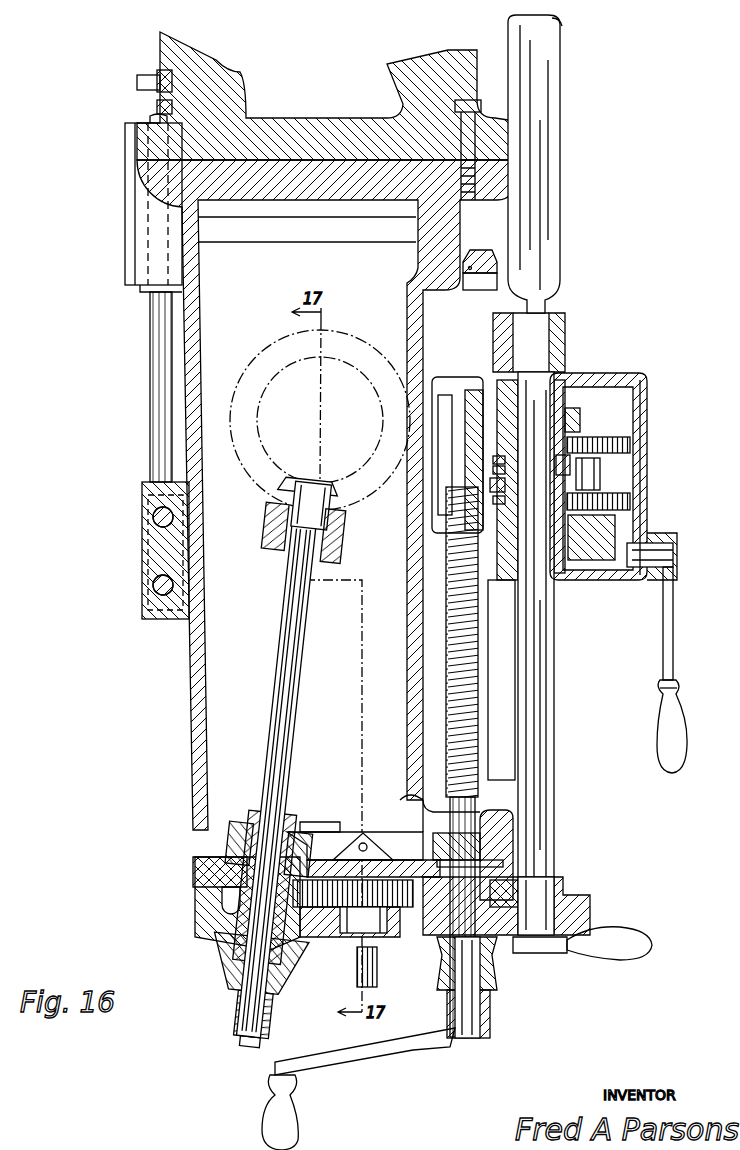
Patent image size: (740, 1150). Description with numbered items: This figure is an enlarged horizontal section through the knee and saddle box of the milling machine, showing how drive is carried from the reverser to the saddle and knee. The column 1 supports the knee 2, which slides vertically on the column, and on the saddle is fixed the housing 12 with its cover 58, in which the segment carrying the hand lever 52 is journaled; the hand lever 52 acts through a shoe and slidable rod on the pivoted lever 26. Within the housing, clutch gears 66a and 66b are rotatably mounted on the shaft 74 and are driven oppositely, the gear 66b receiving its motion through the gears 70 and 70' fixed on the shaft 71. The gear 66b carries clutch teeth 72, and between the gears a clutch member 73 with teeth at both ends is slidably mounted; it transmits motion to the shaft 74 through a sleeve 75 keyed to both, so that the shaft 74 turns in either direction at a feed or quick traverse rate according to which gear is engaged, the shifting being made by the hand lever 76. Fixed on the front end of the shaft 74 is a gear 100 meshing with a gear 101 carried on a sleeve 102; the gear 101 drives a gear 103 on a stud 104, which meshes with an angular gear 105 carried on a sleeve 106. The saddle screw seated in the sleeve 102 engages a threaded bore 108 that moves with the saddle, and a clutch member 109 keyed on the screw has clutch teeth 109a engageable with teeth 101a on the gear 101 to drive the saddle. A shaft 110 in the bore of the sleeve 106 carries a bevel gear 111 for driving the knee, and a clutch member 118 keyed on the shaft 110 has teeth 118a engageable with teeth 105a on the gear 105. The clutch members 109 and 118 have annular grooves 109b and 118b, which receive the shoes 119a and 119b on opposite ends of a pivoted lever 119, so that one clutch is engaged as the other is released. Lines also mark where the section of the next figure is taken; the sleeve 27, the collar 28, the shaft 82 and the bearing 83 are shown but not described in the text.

The column 1 is at (214, 70).
The knee 2 is at (192, 722).
The housing 12 is at (612, 380).
The pivoted lever 26 is at (567, 417).
The sleeve 27 is at (556, 400).
The collar 28 is at (565, 322).
The hand lever 52 is at (688, 727).
The cover 58 is at (641, 414).
The clutch gear 66a is at (574, 528).
The clutch gear 66b is at (487, 452).
The gear 70 is at (617, 440).
The gear 70' is at (624, 499).
The shaft 71 is at (494, 503).
The clutch teeth 72 is at (492, 459).
The clutch member 73 is at (492, 472).
The shaft 74 is at (556, 698).
The sleeve 75 is at (571, 470).
The hand lever 76 is at (622, 958).
The shaft 82 is at (589, 475).
The bearing 83 is at (489, 486).
The gear 100 is at (590, 872).
The gear 101 is at (545, 890).
The clutch teeth 101a is at (500, 864).
The sleeve 102 is at (420, 940).
The gear 103 is at (345, 908).
The stud 104 is at (355, 960).
The angular gear 105 is at (220, 896).
The clutch teeth 105a is at (243, 855).
The sleeve 106 is at (232, 920).
The threaded bore 108 is at (444, 531).
The clutch member 109 is at (480, 830).
The clutch teeth 109a is at (420, 824).
The annular groove 109b is at (512, 834).
The shaft 110 is at (297, 663).
The bevel gear 111 is at (292, 482).
The clutch member 118 is at (300, 838).
The clutch teeth 118a is at (262, 848).
The annular groove 118b is at (333, 845).
The pivoted lever 119 is at (355, 840).
The shoe 119a is at (425, 800).
The shoe 119b is at (298, 828).